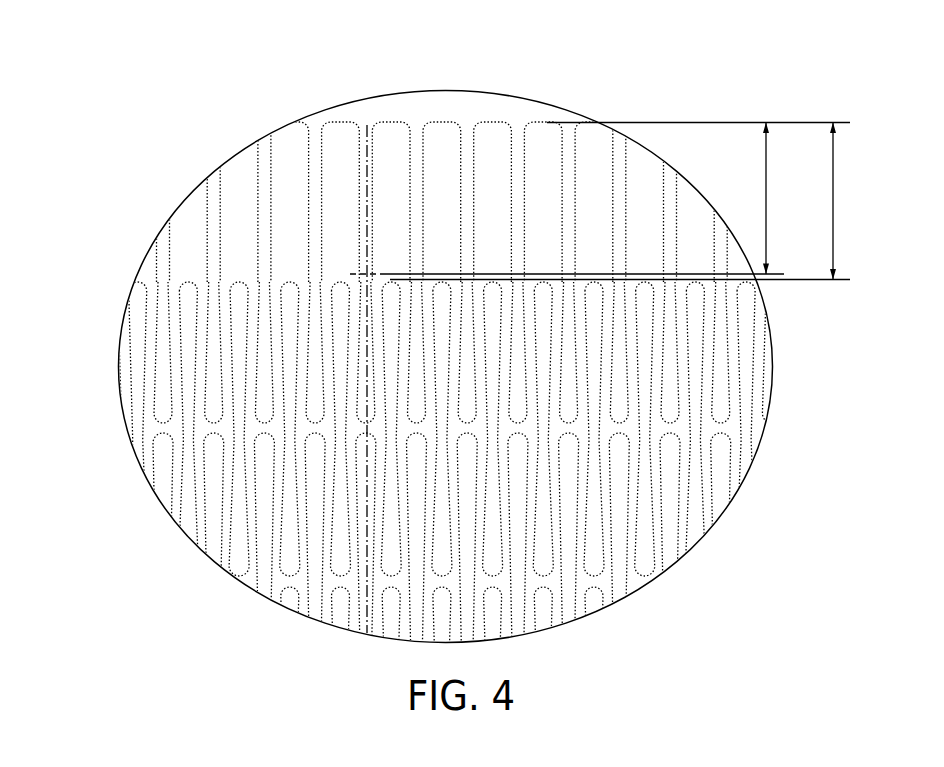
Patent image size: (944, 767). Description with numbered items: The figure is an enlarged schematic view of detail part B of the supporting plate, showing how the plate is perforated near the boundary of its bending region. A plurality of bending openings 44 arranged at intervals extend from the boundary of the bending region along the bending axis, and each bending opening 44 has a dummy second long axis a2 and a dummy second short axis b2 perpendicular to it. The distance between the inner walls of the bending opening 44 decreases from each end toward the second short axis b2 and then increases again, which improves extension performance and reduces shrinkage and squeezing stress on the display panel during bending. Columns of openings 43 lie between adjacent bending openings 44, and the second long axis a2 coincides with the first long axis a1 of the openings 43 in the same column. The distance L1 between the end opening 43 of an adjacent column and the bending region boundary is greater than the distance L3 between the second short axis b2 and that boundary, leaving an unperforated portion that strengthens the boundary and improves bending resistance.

The bending opening 44 is at (367, 127).
The second long axis a2 is at (367, 180).
The second short axis b2 is at (343, 273).
The opening 43 is at (390, 373).
The first long axis a1 is at (367, 535).
The detail part B is at (450, 367).
The distance between second short axis and bending region boundary L3 is at (698, 199).
The distance between end opening and bending region boundary L1 is at (636, 201).